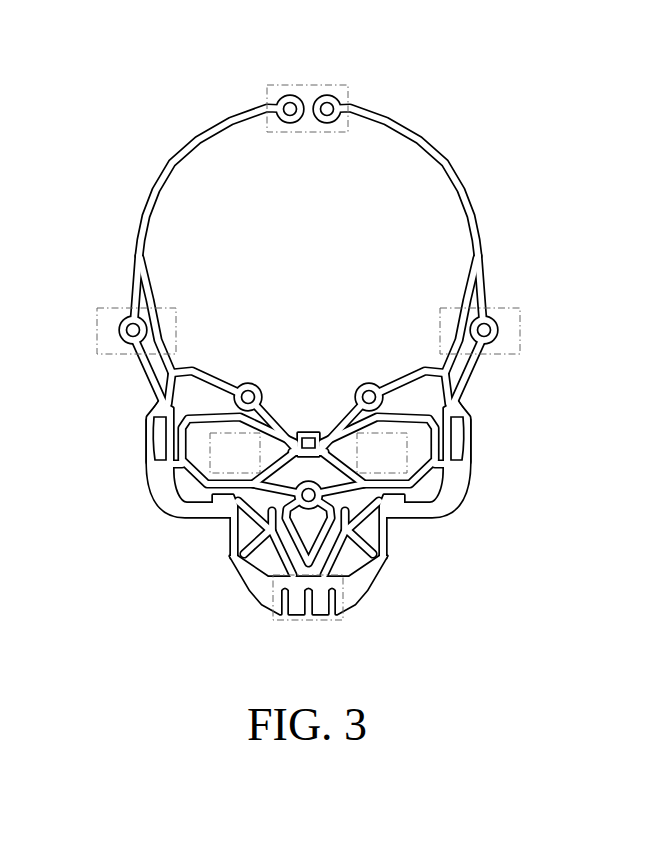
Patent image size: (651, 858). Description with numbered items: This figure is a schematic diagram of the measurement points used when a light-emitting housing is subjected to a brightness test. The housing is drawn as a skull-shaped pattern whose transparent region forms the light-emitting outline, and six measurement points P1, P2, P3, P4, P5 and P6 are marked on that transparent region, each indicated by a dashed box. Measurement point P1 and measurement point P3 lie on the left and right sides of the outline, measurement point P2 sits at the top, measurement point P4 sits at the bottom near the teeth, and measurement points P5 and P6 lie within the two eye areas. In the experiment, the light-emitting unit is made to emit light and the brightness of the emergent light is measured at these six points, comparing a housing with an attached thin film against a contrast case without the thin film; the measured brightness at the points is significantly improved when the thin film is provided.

The measurement point P1 is at (101, 308).
The measurement point P2 is at (307, 85).
The measurement point P3 is at (515, 308).
The measurement point P4 is at (309, 621).
The measurement point P5 is at (212, 444).
The measurement point P6 is at (405, 444).